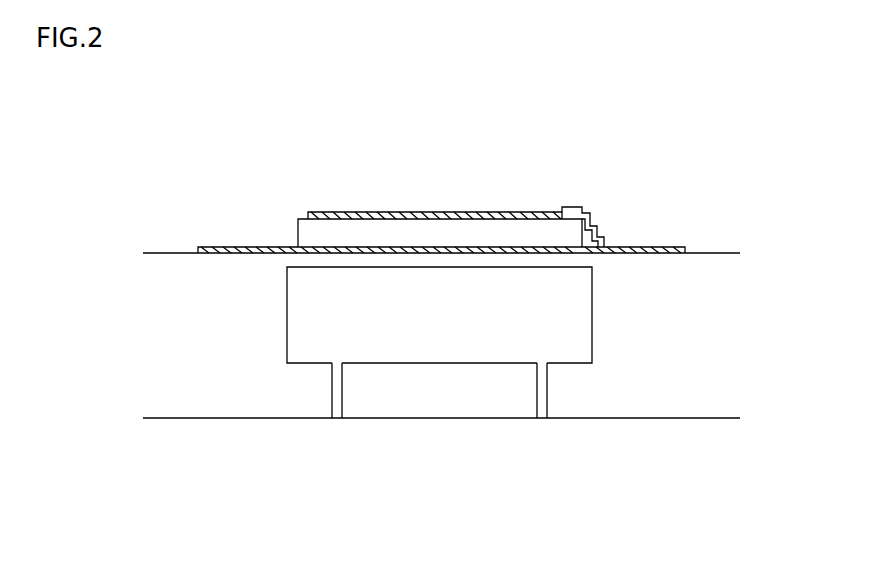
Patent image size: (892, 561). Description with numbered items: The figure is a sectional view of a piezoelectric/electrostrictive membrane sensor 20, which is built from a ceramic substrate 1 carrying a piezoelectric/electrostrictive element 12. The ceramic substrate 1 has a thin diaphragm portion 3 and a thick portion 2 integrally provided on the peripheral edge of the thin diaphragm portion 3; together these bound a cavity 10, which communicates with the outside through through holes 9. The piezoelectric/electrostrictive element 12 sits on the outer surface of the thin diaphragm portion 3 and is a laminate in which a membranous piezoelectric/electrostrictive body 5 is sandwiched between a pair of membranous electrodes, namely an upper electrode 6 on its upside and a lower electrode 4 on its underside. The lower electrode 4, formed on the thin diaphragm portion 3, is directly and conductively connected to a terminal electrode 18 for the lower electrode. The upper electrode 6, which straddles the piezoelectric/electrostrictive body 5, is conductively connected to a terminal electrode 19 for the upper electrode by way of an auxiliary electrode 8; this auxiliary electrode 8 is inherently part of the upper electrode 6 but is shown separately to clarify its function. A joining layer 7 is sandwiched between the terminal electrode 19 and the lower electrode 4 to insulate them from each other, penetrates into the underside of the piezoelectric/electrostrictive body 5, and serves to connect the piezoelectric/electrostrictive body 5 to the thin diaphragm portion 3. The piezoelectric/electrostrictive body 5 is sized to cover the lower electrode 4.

The ceramic substrate 1 is at (796, 262).
The thick portion 2 is at (670, 400).
The thin diaphragm portion 3 is at (441, 257).
The lower electrode 4 is at (380, 250).
The piezoelectric/electrostrictive body 5 is at (300, 235).
The upper electrode 6 is at (326, 212).
The joining layer 7 is at (573, 250).
The auxiliary electrode 8 is at (578, 206).
The through holes 9 is at (338, 417).
The cavity 10 is at (568, 348).
The piezoelectric/electrostrictive element 12 is at (792, 213).
The terminal electrode (for the lower electrode) 18 is at (198, 247).
The terminal electrode (for the upper electrode) 19 is at (688, 251).
The piezoelectric/electrostrictive membrane sensor 20 is at (703, 203).